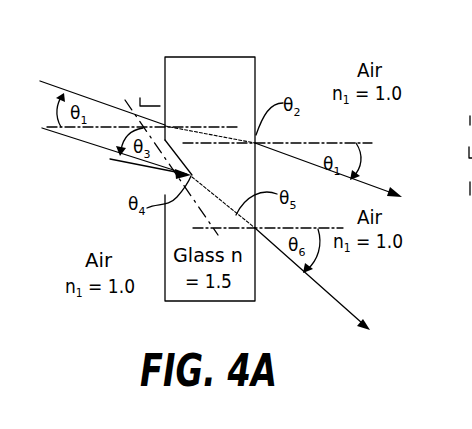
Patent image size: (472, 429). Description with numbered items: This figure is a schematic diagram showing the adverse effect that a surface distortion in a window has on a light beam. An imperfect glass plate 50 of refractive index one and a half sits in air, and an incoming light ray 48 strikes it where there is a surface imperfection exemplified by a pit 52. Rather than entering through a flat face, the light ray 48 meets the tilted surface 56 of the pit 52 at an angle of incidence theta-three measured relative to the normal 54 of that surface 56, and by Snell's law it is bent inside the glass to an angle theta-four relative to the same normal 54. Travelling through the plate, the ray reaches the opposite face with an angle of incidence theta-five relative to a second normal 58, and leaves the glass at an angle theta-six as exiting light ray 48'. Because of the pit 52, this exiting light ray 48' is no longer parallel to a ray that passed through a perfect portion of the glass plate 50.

The light ray 48 is at (99, 155).
The exiting light ray 48' is at (300, 253).
The imperfect glass plate 50 is at (232, 298).
The pit 52 is at (110, 159).
The normal 54 is at (133, 110).
The surface 56 is at (184, 176).
The normal 58 is at (308, 228).